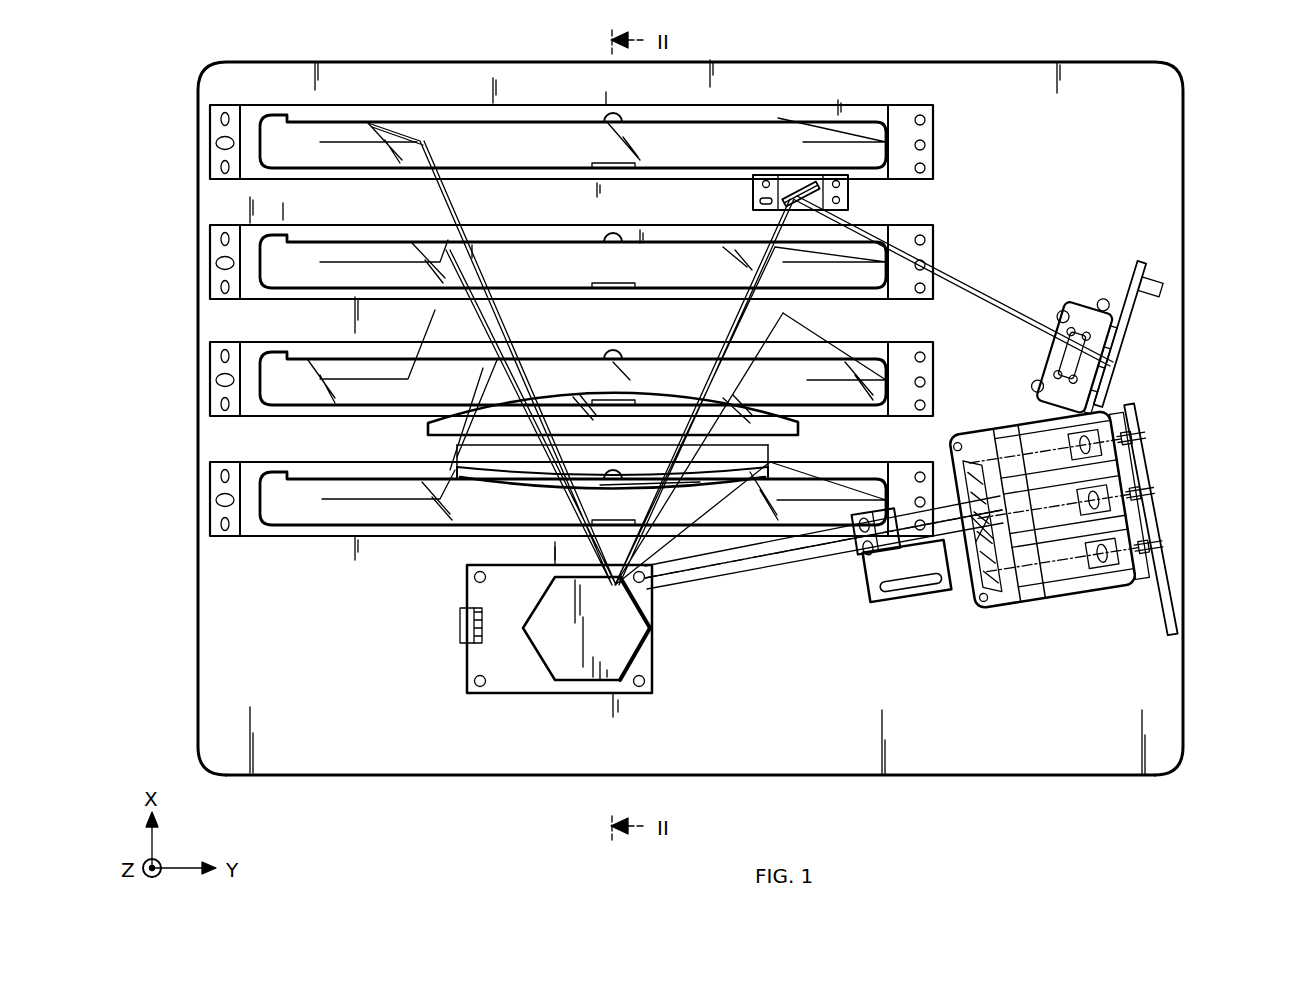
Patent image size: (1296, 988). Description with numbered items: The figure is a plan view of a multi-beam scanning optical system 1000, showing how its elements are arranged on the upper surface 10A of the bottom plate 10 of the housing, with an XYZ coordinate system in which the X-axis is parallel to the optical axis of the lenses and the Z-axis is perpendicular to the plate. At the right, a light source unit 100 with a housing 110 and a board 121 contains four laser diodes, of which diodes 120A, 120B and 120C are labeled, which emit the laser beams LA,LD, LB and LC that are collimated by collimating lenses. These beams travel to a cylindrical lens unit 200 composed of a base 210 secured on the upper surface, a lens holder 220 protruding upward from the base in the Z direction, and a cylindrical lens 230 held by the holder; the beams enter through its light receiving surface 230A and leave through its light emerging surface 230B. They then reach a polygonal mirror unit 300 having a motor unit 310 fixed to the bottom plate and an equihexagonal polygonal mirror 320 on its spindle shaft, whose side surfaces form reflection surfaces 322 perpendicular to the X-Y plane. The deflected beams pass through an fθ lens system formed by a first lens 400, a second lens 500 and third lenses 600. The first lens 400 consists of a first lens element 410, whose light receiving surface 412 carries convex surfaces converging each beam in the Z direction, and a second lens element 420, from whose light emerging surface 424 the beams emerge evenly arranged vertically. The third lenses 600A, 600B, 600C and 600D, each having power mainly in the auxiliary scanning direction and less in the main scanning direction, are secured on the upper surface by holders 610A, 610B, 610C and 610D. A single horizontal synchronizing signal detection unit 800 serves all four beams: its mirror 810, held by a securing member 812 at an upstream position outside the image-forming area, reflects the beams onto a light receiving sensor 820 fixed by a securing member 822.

The multi-beam scanning optical system 1000 is at (717, 418).
The bottom plate 10 is at (194, 623).
The upper surface 10A is at (228, 686).
The light source unit 100 is at (1101, 550).
The light source housing 110 is at (1049, 508).
The laser diode 120A is at (1116, 497).
The laser diode 120B is at (1124, 550).
The laser diode 120C is at (1107, 441).
The circuit board 121 is at (1150, 519).
The cylindrical lens unit 200 is at (883, 589).
The base 210 is at (907, 571).
The lens holder 220 is at (887, 594).
The cylindrical lens 230 is at (876, 532).
The light receiving surface 230A is at (858, 525).
The light emerging surface 230B is at (866, 536).
The polygonal mirror unit 300 is at (585, 647).
The motor unit 310 is at (568, 693).
The polygonal mirror 320 is at (642, 664).
The reflection surfaces 322 is at (641, 610).
The first lens 400 is at (613, 464).
The first lens element 410 is at (531, 490).
The light receiving surface 412 is at (640, 487).
The second lens element 420 is at (566, 433).
The light emerging surface 424 is at (663, 443).
The second lens 500 is at (434, 441).
The third lenses 600 is at (945, 130).
The third lens 600A is at (460, 138).
The third lens 600B is at (355, 250).
The third lens 600C is at (335, 368).
The third lens 600D is at (317, 488).
The holder 610A is at (783, 112).
The holder 610B is at (681, 237).
The holder 610C is at (829, 355).
The holder 610D is at (817, 480).
The horizontal synchronizing signal detection unit 800 is at (1101, 328).
The mirror 810 is at (803, 178).
The securing member 812 is at (846, 200).
The light receiving sensor 820 is at (1076, 351).
The securing member 822 is at (1131, 337).
The laser beams LA,LD is at (1055, 506).
The laser beam LB is at (1064, 559).
The laser beam LC is at (1046, 450).